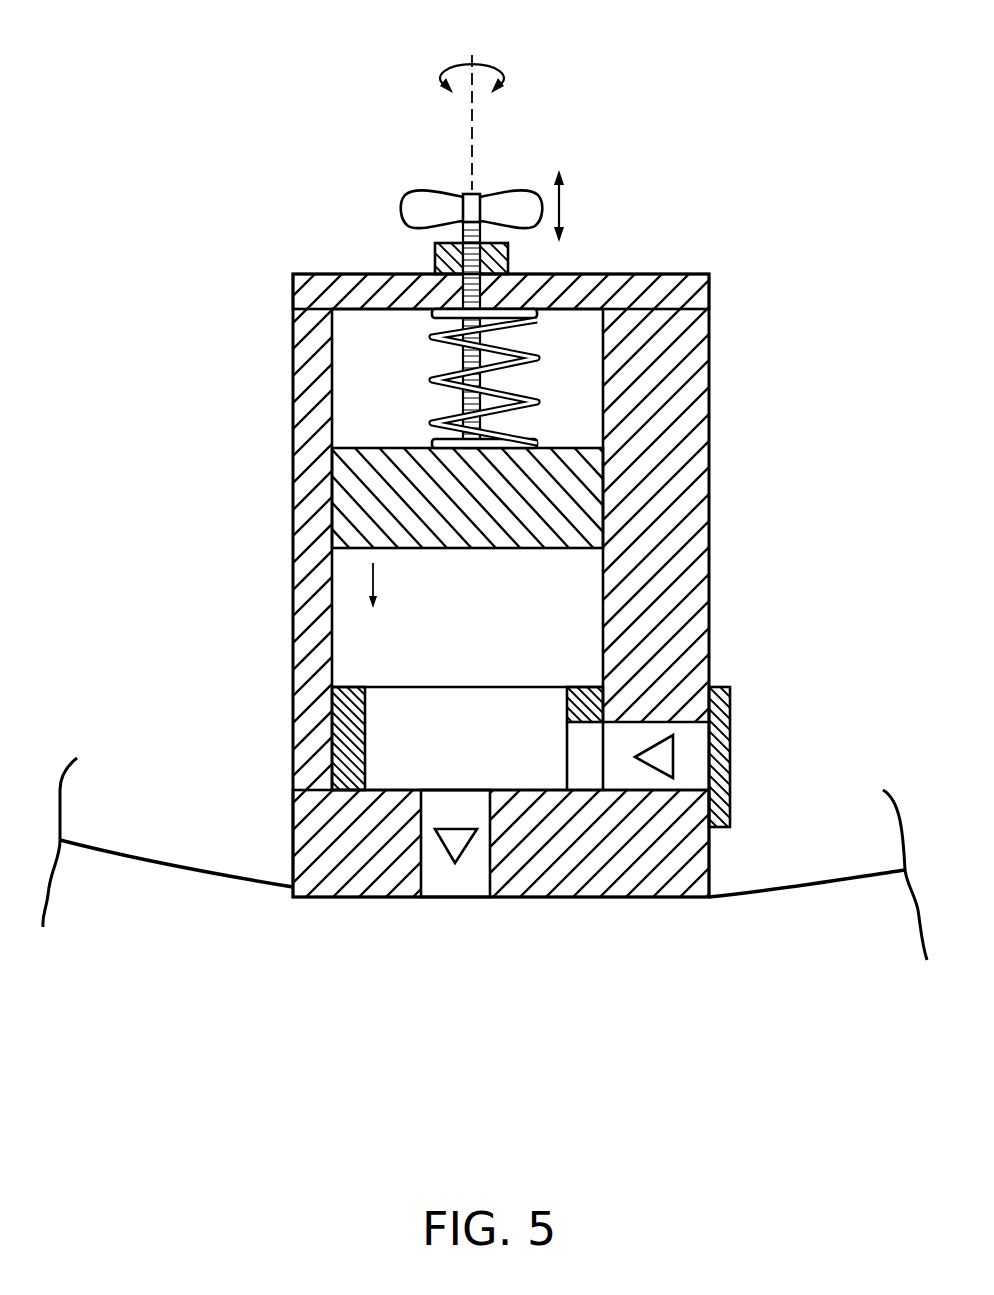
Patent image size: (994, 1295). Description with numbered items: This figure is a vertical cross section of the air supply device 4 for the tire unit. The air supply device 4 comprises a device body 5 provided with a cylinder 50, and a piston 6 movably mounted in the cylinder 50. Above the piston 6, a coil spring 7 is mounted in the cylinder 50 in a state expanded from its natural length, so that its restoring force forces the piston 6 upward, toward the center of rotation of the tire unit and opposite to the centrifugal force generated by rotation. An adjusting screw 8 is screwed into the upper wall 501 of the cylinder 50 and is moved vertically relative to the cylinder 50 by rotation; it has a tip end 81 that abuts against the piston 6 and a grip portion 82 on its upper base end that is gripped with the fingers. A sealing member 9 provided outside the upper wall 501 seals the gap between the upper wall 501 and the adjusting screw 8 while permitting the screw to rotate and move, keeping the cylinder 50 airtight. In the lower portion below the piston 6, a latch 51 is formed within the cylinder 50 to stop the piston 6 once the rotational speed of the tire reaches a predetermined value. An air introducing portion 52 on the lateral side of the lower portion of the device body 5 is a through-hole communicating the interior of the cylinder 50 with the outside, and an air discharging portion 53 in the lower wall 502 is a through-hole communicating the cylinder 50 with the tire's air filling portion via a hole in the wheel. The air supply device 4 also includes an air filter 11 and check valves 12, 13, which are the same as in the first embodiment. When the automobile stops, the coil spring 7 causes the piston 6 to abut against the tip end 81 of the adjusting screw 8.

The air supply device 4 is at (692, 124).
The device body 5 is at (672, 265).
The cylinder 50 is at (583, 293).
The upper wall 501 is at (363, 292).
The lower wall 502 is at (362, 872).
The latch 51 is at (340, 735).
The air introducing portion 52 is at (690, 772).
The air discharging portion 53 is at (443, 877).
The piston 6 is at (547, 513).
The coil spring 7 is at (540, 387).
The adjusting screw 8 is at (564, 276).
The tip end 81 is at (490, 433).
The grip portion 82 is at (517, 208).
The sealing member 9 is at (500, 262).
The air filter 11 is at (718, 717).
The check valve 12 is at (665, 752).
The check valve 13 is at (458, 856).